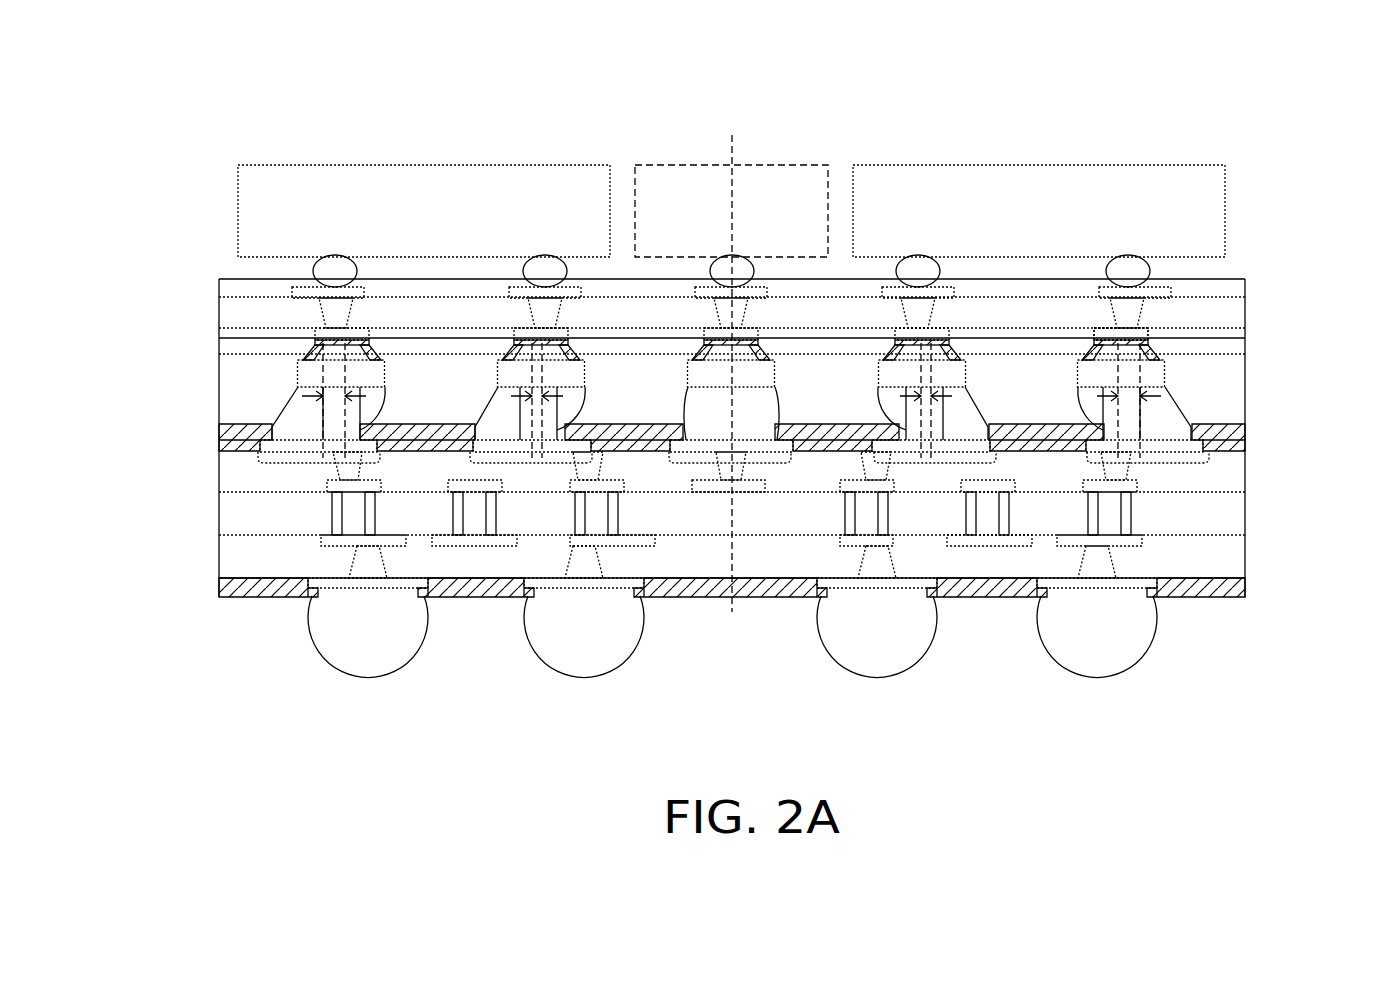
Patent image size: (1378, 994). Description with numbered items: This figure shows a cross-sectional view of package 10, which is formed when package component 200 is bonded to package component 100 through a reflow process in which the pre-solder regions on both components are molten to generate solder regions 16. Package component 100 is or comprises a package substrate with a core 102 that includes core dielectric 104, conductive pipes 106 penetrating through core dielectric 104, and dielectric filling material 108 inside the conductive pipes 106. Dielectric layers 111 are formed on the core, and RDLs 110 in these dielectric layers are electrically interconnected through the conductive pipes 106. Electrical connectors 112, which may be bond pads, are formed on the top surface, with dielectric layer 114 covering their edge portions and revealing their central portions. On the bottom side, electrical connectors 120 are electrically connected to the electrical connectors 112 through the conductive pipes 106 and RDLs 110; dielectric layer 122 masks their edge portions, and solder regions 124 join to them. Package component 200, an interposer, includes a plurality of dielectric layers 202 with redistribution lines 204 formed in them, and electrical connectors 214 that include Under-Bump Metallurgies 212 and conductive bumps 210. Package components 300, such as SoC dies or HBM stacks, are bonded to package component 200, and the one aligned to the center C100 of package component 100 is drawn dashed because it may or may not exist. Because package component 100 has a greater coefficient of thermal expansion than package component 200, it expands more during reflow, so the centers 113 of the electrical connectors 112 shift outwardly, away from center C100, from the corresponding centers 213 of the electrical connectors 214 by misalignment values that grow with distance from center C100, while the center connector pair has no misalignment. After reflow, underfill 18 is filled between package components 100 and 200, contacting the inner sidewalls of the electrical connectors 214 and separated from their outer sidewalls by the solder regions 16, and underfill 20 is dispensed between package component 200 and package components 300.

The package 10 is at (1272, 105).
The underfill 20 is at (1225, 268).
The package component 300 is at (581, 251).
The package component 200 is at (126, 425).
The dielectric layers 202 is at (220, 346).
The redistribution lines 204 is at (338, 322).
The Under-Bump Metallurgies 212 is at (1160, 332).
The conductive bumps 210 is at (1165, 360).
The electrical connectors 214 is at (1312, 312).
The underfill 18 is at (1238, 400).
The solder regions 16 is at (322, 422).
The centers 113 is at (545, 405).
The centers 213 is at (395, 408).
The dielectric layer 114 is at (1240, 435).
The package component 100 is at (128, 677).
The dielectric layers 111 is at (222, 560).
The core dielectric 104 is at (222, 513).
The electrical connectors 112 is at (332, 458).
The RDLs 110 is at (1097, 482).
The conductive pipes 106 is at (990, 505).
The dielectric filling material 108 is at (1118, 512).
The core 102 is at (1247, 495).
The electrical connectors 120 is at (1140, 580).
The dielectric layer 122 is at (1246, 588).
The solder regions 124 is at (370, 645).
The center C100 is at (765, 640).